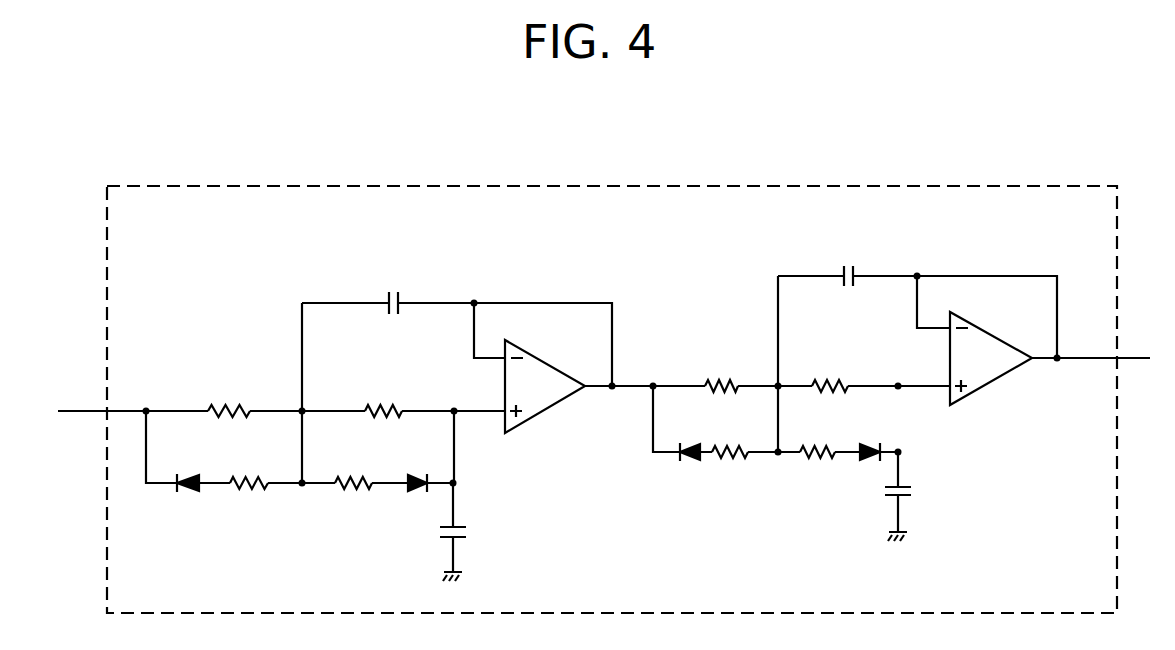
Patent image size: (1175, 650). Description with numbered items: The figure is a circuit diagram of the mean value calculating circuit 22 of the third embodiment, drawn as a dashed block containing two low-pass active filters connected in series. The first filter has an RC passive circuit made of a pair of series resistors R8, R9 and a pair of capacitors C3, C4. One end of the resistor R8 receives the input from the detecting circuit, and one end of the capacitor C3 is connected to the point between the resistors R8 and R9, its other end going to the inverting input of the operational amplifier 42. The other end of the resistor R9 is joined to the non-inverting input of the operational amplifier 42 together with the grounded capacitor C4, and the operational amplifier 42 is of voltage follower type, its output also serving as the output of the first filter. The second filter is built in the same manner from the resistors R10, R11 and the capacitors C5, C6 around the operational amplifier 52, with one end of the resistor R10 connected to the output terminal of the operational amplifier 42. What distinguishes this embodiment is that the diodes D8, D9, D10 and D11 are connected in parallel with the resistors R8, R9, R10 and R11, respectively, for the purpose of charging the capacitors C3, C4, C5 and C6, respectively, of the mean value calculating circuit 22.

The mean value calculating circuit 22 is at (686, 184).
The operational amplifier 42 is at (560, 401).
The operational amplifier 52 is at (1003, 375).
The resistor R8 is at (229, 432).
The resistor R9 is at (383, 432).
The resistor R10 is at (727, 407).
The resistor R11 is at (835, 407).
The capacitor C3 is at (396, 322).
The capacitor C4 is at (475, 552).
The capacitor C5 is at (850, 294).
The capacitor C6 is at (917, 506).
The diode D8 is at (192, 504).
The diode D9 is at (422, 504).
The diode D10 is at (703, 471).
The diode D11 is at (878, 471).